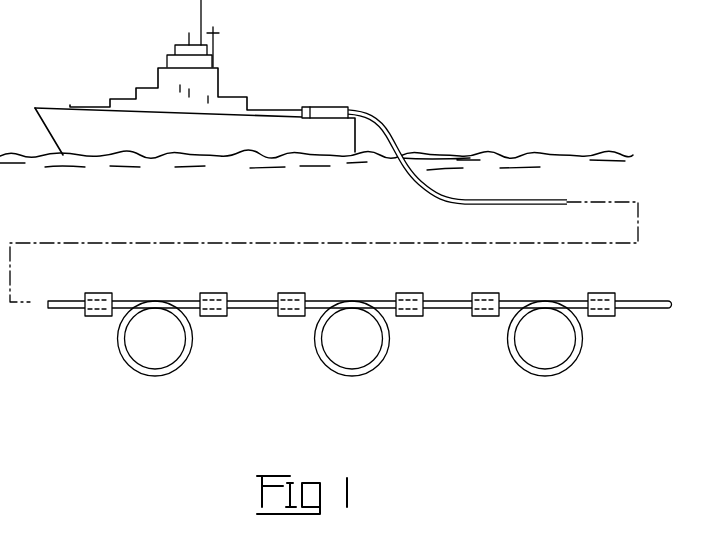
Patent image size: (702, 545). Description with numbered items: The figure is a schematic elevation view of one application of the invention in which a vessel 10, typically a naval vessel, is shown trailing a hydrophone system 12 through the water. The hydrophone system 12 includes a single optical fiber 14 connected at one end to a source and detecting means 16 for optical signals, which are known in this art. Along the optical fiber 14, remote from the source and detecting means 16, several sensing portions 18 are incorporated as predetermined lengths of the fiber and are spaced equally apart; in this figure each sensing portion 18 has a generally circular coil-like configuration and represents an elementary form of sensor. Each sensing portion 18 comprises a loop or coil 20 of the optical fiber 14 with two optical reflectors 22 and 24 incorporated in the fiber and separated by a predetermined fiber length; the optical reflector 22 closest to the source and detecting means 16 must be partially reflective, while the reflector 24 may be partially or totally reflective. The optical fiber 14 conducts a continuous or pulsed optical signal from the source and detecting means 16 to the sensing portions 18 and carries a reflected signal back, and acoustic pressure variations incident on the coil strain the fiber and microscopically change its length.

The vessel 10 is at (64, 108).
The hydrophone system 12 is at (346, 202).
The optical fiber 14 is at (408, 175).
The source and detecting means 16 is at (325, 107).
The sensing portion 18 is at (345, 328).
The loop or coil 20 is at (194, 332).
The optical reflector 22 is at (102, 293).
The optical reflector 24 is at (215, 293).